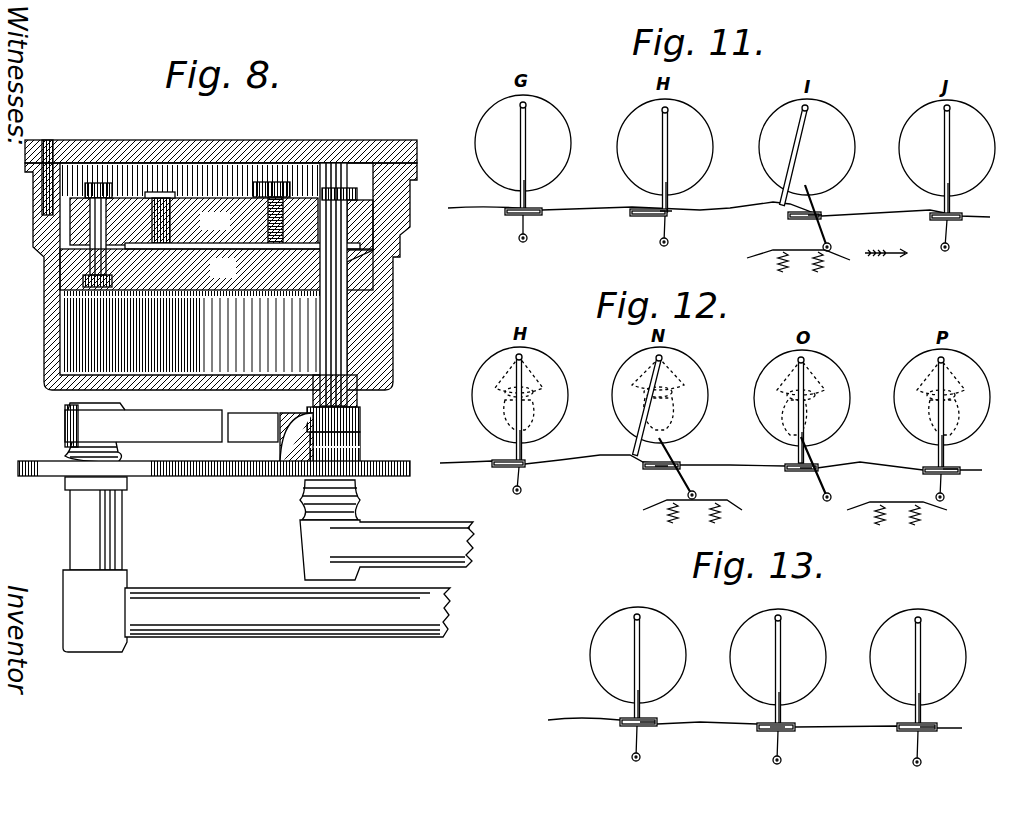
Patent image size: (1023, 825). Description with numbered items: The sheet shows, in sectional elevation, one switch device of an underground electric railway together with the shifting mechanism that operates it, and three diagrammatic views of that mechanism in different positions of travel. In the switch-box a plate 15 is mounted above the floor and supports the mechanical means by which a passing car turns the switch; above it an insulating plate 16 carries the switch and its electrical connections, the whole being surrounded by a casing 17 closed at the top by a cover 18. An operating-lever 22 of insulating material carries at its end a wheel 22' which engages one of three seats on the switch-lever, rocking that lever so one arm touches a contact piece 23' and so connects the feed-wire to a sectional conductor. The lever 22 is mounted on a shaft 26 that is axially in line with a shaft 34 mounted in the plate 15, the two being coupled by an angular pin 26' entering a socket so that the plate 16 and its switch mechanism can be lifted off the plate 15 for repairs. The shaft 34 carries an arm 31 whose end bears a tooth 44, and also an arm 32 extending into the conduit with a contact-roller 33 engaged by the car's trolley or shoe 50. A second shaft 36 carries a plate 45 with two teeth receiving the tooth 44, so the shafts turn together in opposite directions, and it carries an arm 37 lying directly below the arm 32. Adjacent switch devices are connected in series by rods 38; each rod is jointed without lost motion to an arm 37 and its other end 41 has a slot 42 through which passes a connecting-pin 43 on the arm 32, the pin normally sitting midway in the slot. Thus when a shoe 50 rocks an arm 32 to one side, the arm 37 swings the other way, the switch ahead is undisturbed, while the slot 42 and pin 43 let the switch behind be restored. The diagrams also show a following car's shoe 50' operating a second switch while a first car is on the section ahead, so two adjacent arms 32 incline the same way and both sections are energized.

In FIG. 8, the plate 15 is at (216, 478).
In FIG. 8, the insulating plate or block 16 is at (216, 269).
In FIG. 8, the casing or boxing 17 is at (46, 271).
In FIG. 8, the cover 18 is at (176, 142).
In FIG. 8, the operating-lever 22 is at (221, 224).
In FIG. 8, the wheel 22' is at (129, 200).
In FIG. 8, the contact spring or piece 23' is at (295, 182).
In FIG. 8, the shaft 26 is at (318, 284).
In FIG. 8, the angular pin or projection 26' is at (355, 419).
In FIG. 8, the arm or lever 31 is at (270, 440).
In FIG. 12, the arm or lever 31 is at (533, 413).
In FIG. 8, the arm 32 is at (387, 550).
In FIG. 11, the arm 32 is at (668, 233).
In FIG. 12, the arm 32 is at (520, 485).
In FIG. 13, the arm 32 is at (776, 746).
In FIG. 11, the contact-roller 33 is at (735, 253).
In FIG. 12, the contact-roller 33 is at (726, 504).
In FIG. 13, the contact-roller 33 is at (777, 769).
In FIG. 8, the shaft 34 is at (342, 500).
In FIG. 8, the shaft 36 is at (106, 564).
In FIG. 8, the arm 37 is at (287, 612).
In FIG. 11, the arm 37 is at (669, 151).
In FIG. 12, the arm 37 is at (636, 446).
In FIG. 13, the arm 37 is at (642, 660).
In FIG. 11, the rod 38 is at (580, 206).
In FIG. 12, the rod 38 is at (711, 457).
In FIG. 13, the rod 38 is at (755, 715).
In FIG. 11, the end of the rod 41 is at (636, 218).
In FIG. 12, the end of the rod 41 is at (494, 470).
In FIG. 13, the end of the rod 41 is at (622, 729).
In FIG. 11, the slot 42 is at (801, 219).
In FIG. 12, the slot 42 is at (790, 473).
In FIG. 13, the slot 42 is at (648, 731).
In FIG. 11, the connecting-pin 43 is at (670, 213).
In FIG. 12, the connecting-pin 43 is at (676, 468).
In FIG. 13, the connecting-pin 43 is at (786, 729).
In FIG. 8, the pin or tooth 44 is at (226, 421).
In FIG. 8, the plate or arm 45 is at (143, 432).
In FIG. 12, the plate or arm 45 is at (506, 379).
In FIG. 11, the trolley or shoe 50 is at (827, 263).
In FIG. 12, the trolley or shoe 50 is at (897, 505).
In FIG. 12, the trolley or shoe 50' is at (692, 502).